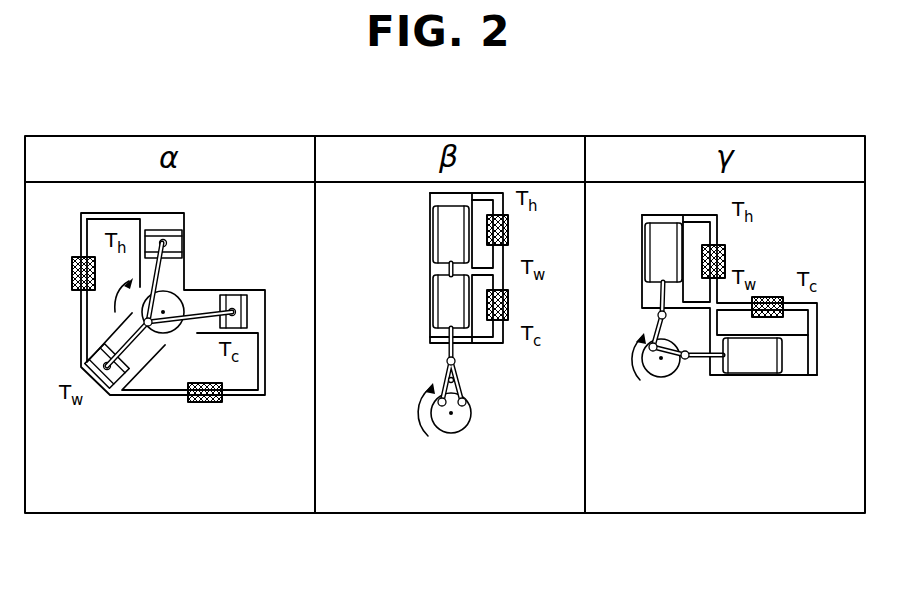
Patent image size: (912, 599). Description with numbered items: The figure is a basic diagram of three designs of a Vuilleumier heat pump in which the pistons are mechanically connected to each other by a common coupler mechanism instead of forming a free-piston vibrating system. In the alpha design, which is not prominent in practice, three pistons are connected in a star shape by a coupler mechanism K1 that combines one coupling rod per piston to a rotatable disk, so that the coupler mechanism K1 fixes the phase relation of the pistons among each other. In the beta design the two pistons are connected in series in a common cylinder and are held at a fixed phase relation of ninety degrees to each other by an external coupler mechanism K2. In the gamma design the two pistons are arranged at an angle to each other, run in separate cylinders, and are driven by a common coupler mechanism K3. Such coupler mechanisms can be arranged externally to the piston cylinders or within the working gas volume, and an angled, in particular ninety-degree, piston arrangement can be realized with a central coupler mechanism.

The coupler mechanism K1 is at (188, 286).
The external coupler mechanism K2 is at (477, 421).
The coupler mechanism K3 is at (657, 382).